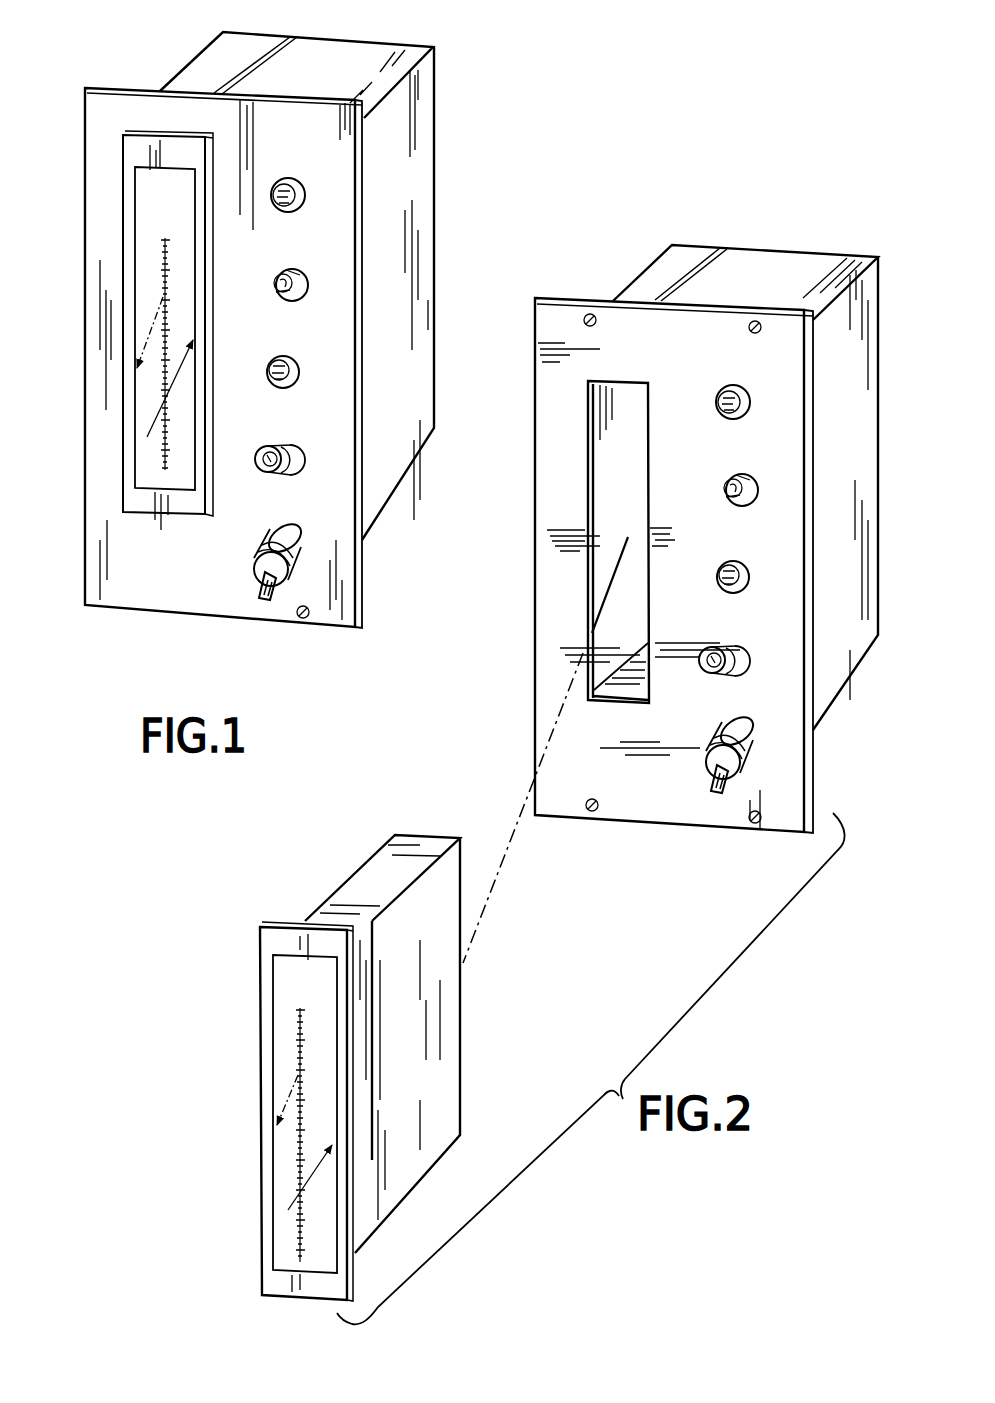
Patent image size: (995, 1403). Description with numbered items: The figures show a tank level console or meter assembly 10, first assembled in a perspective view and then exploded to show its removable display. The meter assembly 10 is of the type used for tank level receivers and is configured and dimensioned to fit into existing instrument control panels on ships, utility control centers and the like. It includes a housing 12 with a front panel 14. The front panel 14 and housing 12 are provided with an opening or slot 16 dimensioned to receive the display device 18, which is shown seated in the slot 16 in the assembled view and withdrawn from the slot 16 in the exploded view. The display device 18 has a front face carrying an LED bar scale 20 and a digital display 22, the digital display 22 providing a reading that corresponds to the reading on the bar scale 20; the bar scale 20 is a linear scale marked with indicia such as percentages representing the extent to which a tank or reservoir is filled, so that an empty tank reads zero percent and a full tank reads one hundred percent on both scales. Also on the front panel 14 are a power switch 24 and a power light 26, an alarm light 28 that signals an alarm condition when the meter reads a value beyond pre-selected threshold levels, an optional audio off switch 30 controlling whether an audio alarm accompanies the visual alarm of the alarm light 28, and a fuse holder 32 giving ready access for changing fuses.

In FIG. 1, the meter assembly 10 is at (478, 102).
In FIG. 1, the housing 12 is at (178, 53).
In FIG. 2, the housing 12 is at (647, 267).
In FIG. 1, the front panel 14 is at (123, 588).
In FIG. 2, the front panel 14 is at (572, 797).
In FIG. 2, the slot 16 is at (618, 478).
In FIG. 1, the display device 18 is at (148, 393).
In FIG. 2, the display device 18 is at (288, 1137).
In FIG. 1, the LED bar scale 20 is at (160, 447).
In FIG. 2, the LED bar scale 20 is at (300, 1182).
In FIG. 1, the digital display 22 is at (158, 213).
In FIG. 2, the digital display 22 is at (292, 1000).
In FIG. 1, the power switch 24 is at (306, 462).
In FIG. 2, the power switch 24 is at (752, 663).
In FIG. 1, the power light 26 is at (298, 372).
In FIG. 2, the power light 26 is at (751, 577).
In FIG. 1, the alarm light 28 is at (305, 193).
In FIG. 2, the alarm light 28 is at (752, 400).
In FIG. 1, the audio off switch 30 is at (310, 282).
In FIG. 2, the audio off switch 30 is at (760, 488).
In FIG. 1, the fuse holder 32 is at (252, 570).
In FIG. 2, the fuse holder 32 is at (703, 778).